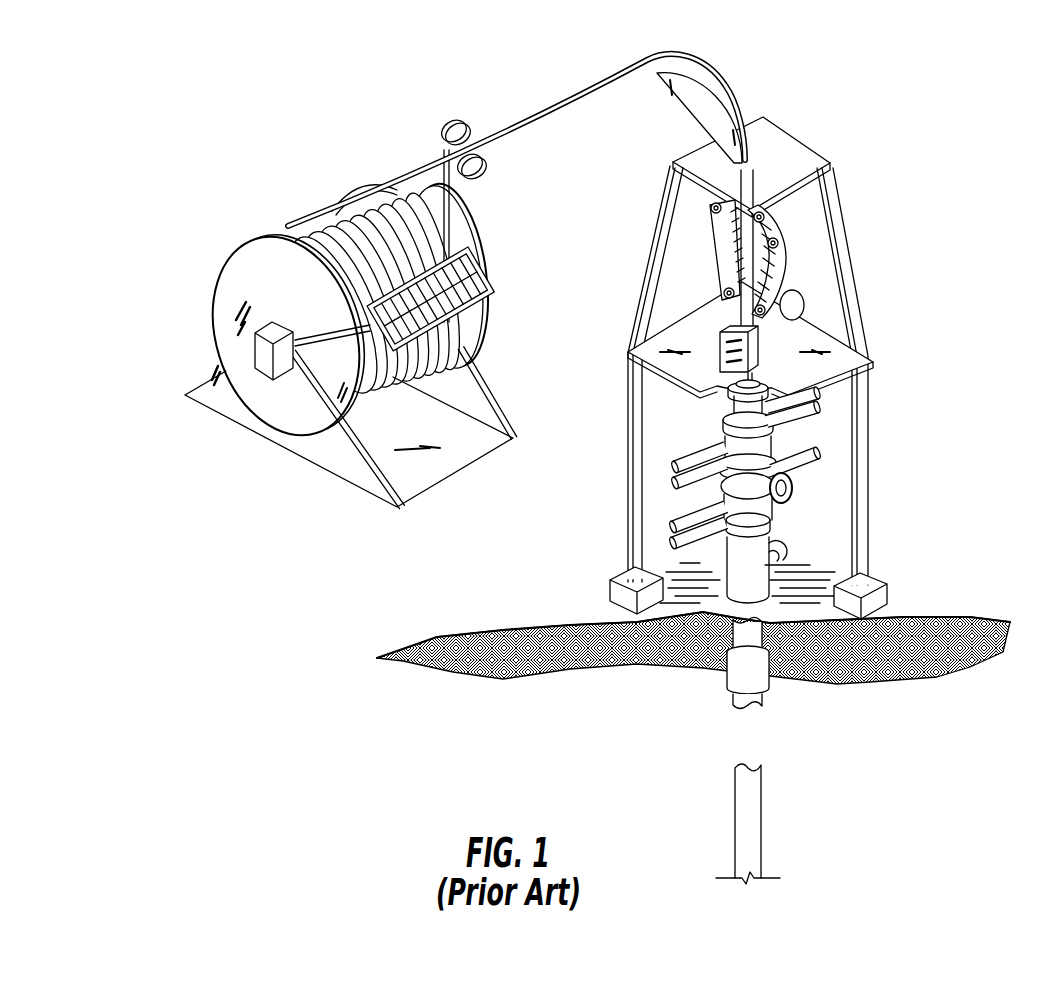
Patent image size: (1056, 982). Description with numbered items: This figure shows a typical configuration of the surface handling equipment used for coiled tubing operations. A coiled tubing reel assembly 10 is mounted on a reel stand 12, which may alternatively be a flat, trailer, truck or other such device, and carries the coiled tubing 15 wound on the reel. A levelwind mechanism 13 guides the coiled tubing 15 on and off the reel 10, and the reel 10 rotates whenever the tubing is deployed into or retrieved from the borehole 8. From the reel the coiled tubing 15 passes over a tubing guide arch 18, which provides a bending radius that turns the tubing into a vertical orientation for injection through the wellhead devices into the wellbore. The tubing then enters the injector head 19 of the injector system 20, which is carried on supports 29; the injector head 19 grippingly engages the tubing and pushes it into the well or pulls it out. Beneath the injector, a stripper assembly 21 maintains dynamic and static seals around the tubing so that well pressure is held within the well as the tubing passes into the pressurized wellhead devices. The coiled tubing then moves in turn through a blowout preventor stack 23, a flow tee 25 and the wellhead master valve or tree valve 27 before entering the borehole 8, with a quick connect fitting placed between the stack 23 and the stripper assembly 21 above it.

The production tubing 8 is at (763, 803).
The cable reel 10 is at (303, 192).
The reel base frame 12 is at (292, 422).
The vertical guide post with sheaves 13 is at (455, 228).
The cable 15 is at (575, 95).
The cable guide gusset plate 18 is at (697, 112).
The drive mechanism 19 is at (705, 240).
The wellhead support frame 20 is at (789, 332).
The stuffing box 21 is at (736, 398).
The wellhead valve assembly 23 is at (660, 459).
The casing head 25 is at (787, 548).
The well casing 27 is at (776, 690).
The frame leg 29 is at (872, 428).